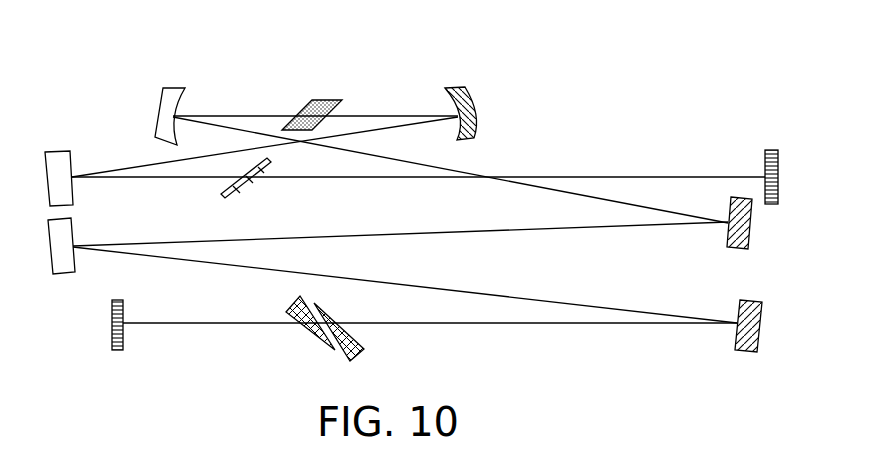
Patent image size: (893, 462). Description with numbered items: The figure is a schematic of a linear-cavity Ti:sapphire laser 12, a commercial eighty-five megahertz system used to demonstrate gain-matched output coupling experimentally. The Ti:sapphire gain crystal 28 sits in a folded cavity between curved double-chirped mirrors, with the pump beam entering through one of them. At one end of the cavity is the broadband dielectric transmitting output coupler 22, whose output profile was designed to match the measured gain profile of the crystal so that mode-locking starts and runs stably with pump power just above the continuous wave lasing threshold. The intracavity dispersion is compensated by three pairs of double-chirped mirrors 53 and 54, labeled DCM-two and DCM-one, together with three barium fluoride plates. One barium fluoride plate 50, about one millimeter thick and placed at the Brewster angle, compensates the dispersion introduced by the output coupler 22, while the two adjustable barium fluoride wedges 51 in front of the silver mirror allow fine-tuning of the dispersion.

The linear-cavity Ti:sapphire laser 12 is at (114, 39).
The output coupler 22 is at (765, 151).
The Ti:Sa gain crystal 28 is at (303, 105).
The BaF2 plate 50 is at (222, 195).
The adjustable wedges 51 is at (314, 326).
The double-chirped mirrors 53 is at (57, 173).
The double-chirped mirrors 54 is at (473, 136).